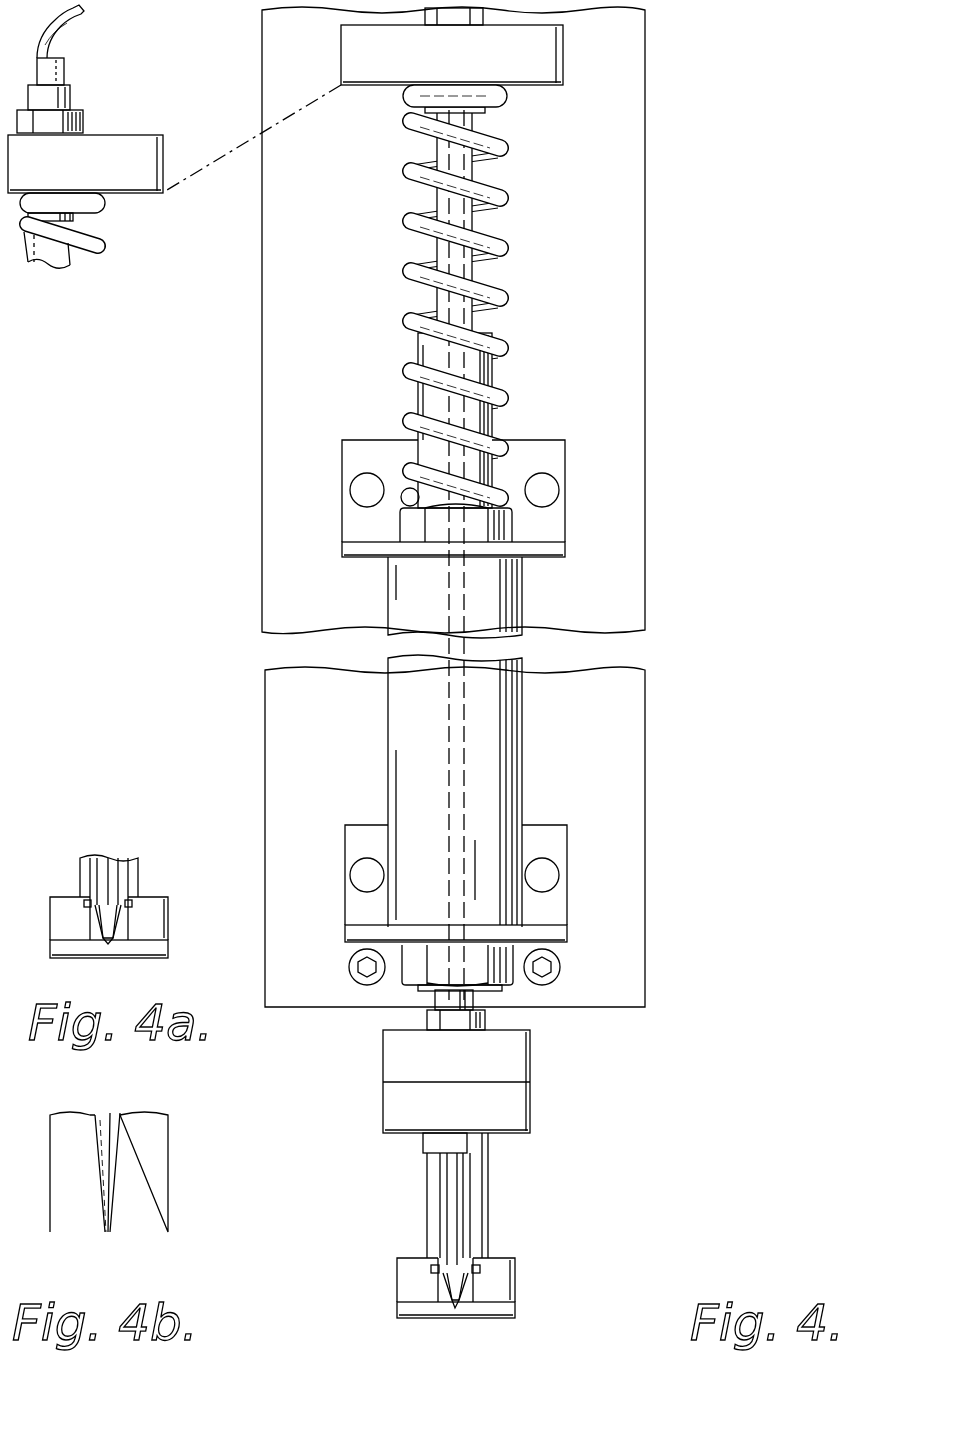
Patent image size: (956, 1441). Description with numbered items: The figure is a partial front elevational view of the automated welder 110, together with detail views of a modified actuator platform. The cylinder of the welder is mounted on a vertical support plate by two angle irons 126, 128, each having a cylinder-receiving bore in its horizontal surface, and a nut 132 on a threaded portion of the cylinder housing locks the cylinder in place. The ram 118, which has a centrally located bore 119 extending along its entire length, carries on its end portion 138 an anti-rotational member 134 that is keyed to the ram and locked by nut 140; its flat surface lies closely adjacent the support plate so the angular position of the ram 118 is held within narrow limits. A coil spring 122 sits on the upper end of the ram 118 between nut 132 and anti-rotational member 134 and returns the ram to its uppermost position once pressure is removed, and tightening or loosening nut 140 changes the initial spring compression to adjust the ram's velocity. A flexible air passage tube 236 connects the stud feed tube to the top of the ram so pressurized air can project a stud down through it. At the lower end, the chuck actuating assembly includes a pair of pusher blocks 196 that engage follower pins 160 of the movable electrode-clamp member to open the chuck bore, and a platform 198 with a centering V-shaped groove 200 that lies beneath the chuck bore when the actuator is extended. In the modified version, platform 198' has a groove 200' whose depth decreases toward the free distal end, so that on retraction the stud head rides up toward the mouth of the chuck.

In FIG. 4, the welder 110 is at (673, 343).
In FIG. 4, the ram 118 is at (437, 243).
In FIG. 4, the bore 119 is at (455, 600).
In FIG. 4, the coil spring 122 is at (407, 557).
In FIG. 4, the angle iron 126 is at (352, 938).
In FIG. 4, the angle iron 128 is at (352, 553).
In FIG. 4, the nut 132 is at (410, 522).
In FIG. 4, the anti-rotational member 134 is at (352, 57).
In FIG. 4, the end portion 138 is at (66, 92).
In FIG. 4, the nut 140 is at (76, 120).
In FIG. 4, the follower pin 160 is at (431, 1267).
In FIG. 4, the pusher block 196 is at (397, 1285).
In FIG. 4, the platform 198 is at (490, 1312).
In FIG. 4, the centering V-shaped groove 200 is at (440, 1315).
In FIG. 4, the flexible air passage tube 236 is at (58, 35).
In FIG. 4A, the platform 198' is at (146, 927).
In FIG. 4B, the platform 198' is at (146, 1172).
In FIG. 4A, the groove 200' is at (96, 942).
In FIG. 4B, the groove 200' is at (161, 1172).